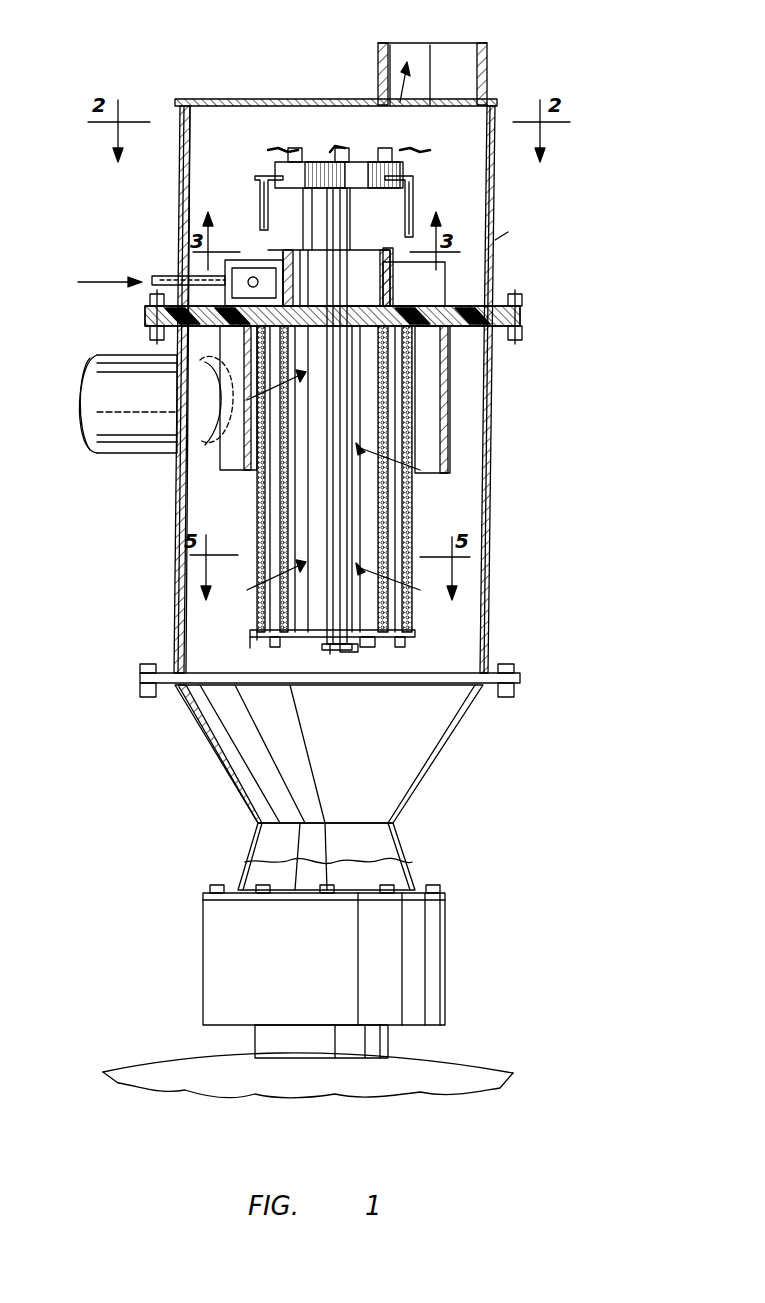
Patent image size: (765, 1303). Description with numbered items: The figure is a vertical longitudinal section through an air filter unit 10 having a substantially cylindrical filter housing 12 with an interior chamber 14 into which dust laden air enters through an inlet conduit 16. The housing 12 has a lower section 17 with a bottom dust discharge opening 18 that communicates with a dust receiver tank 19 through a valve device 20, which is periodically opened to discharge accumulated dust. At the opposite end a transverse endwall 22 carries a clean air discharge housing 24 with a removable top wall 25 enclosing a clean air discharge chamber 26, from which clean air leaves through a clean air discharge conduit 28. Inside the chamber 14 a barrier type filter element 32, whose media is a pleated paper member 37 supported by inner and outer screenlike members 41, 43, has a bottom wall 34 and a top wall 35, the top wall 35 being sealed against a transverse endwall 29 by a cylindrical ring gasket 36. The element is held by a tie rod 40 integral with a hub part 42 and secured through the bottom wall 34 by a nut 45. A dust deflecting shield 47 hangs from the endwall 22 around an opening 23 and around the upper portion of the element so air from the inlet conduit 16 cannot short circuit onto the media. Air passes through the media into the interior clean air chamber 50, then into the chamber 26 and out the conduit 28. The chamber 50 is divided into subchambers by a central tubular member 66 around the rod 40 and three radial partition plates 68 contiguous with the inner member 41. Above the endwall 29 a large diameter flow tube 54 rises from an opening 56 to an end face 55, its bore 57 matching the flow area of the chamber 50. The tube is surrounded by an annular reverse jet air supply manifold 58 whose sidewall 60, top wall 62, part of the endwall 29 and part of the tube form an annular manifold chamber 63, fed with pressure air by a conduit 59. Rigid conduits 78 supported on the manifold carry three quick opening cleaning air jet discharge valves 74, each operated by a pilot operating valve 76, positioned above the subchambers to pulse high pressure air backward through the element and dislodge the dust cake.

The air filter unit 10 is at (508, 236).
The filter housing 12 is at (486, 540).
The interior chamber 14 is at (234, 512).
The inlet conduit 16 is at (135, 442).
The lower section 17 is at (466, 742).
The dust discharge opening 18 is at (376, 790).
The dust receiver tank 19 is at (470, 1068).
The valve device 20 is at (446, 940).
The transverse endwall 22 is at (212, 345).
The opening 23 is at (200, 374).
The clean air discharge housing 24 is at (181, 196).
The top wall 25 is at (220, 99).
The clean air discharge chamber 26 is at (356, 132).
The clean air discharge conduit 28 is at (492, 60).
The transverse endwall 29 is at (440, 306).
The filter element 32 is at (400, 483).
The bottom wall 34 is at (298, 670).
The top wall 35 is at (400, 342).
The cylindrical ring gasket 36 is at (410, 348).
The pleated paper member 37 is at (258, 620).
The tie rod 40 is at (352, 650).
The inner screenlike member 41 is at (378, 640).
The hub part 42 is at (352, 262).
The outer screenlike member 43 is at (252, 640).
The nut 45 is at (332, 654).
The dust deflecting shield 47 is at (215, 462).
The clean air chamber 50 is at (320, 452).
The flow tube 54 is at (377, 262).
The end face 55 is at (316, 250).
The opening 56 is at (302, 252).
The bore 57 is at (360, 340).
The reverse jet air supply manifold 58 is at (225, 262).
The conduit 59 is at (157, 276).
The sidewall 60 is at (150, 316).
The top wall 62 is at (272, 256).
The annular manifold chamber 63 is at (426, 298).
The central tubular member 66 is at (350, 644).
The partition plates 68 is at (290, 640).
The cleaning air jet discharge valves 74 is at (352, 200).
The pilot operating valve 76 is at (298, 150).
The conduits 78 is at (258, 212).